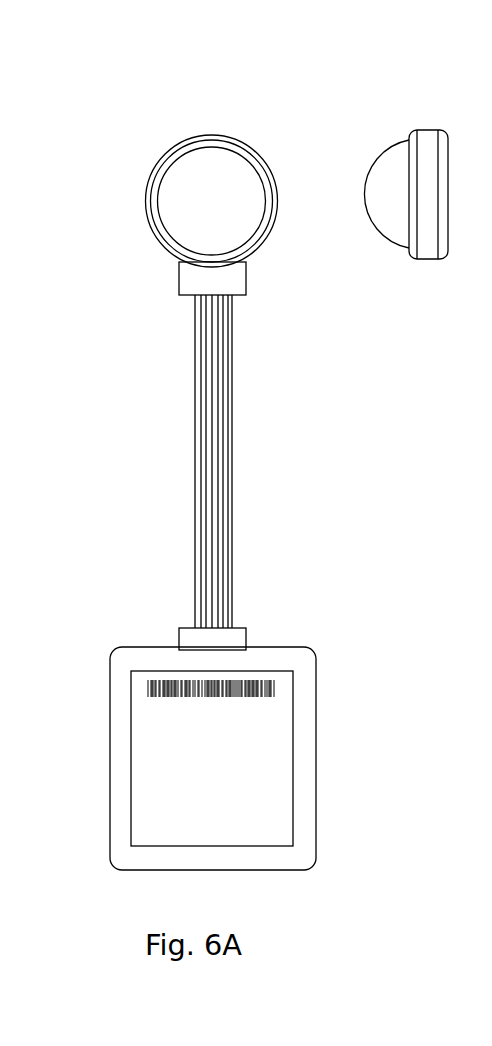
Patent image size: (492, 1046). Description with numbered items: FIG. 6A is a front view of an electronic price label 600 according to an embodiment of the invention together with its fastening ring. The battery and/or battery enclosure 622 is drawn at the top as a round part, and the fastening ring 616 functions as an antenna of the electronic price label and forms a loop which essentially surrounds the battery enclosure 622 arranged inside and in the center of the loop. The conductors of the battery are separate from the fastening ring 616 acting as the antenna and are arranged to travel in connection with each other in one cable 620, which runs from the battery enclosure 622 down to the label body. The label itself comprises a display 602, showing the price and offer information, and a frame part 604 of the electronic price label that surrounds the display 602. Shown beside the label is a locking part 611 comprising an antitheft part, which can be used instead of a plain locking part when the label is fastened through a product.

The electronic shelf label assembly 600 is at (96, 144).
The display 602 is at (277, 835).
The frame part 604 is at (122, 680).
The locking part comprising an antitheft part 611 is at (430, 163).
The fastening ring 616 is at (197, 490).
The cable 620 is at (210, 392).
The battery enclosure 622 is at (245, 172).